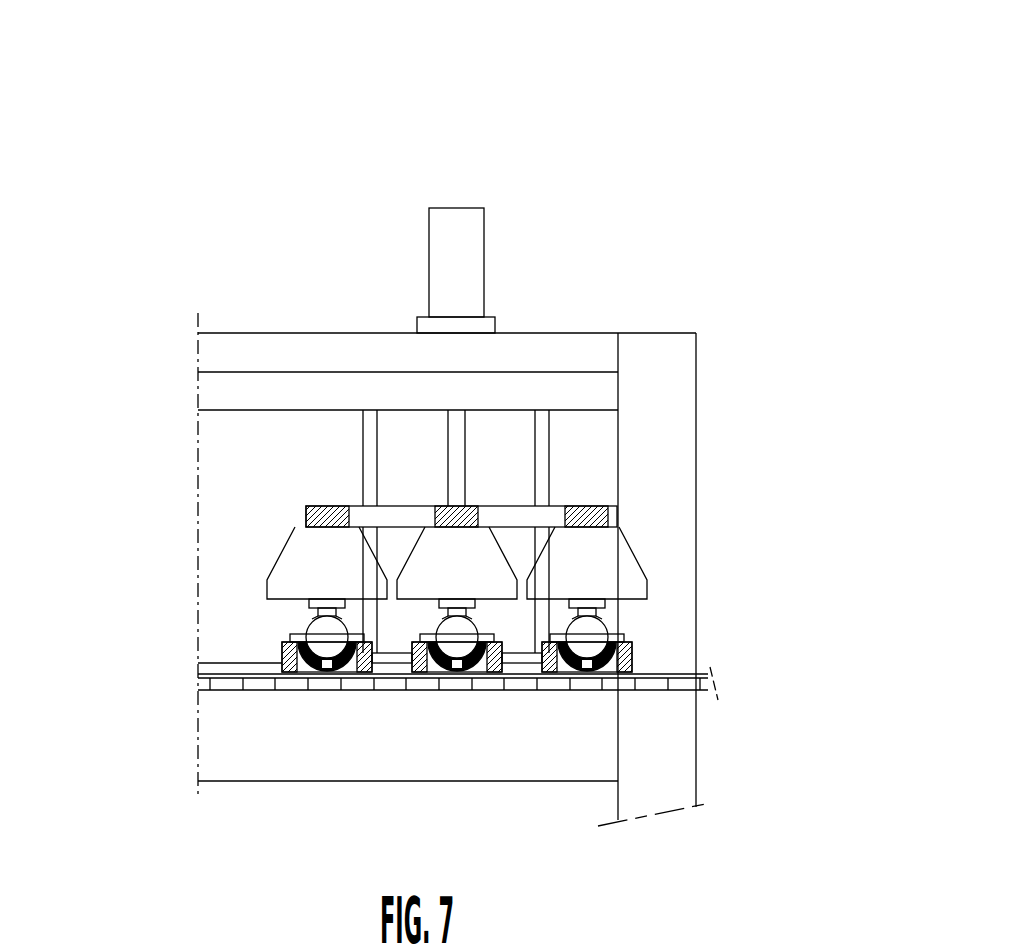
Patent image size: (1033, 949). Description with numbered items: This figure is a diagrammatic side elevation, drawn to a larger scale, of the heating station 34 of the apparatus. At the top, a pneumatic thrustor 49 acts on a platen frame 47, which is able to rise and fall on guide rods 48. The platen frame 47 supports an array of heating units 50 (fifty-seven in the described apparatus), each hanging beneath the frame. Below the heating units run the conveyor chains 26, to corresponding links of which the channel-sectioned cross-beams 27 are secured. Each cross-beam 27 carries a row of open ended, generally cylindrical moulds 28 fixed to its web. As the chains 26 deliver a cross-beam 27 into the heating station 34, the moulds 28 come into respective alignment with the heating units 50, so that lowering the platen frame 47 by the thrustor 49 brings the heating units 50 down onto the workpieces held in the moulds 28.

The conveyor chains 26 is at (653, 683).
The cross-beam 27 is at (280, 648).
The mould 28 is at (300, 668).
The heating station 34 is at (587, 303).
The platen frame 47 is at (604, 510).
The guide rods 48 is at (365, 458).
The pneumatic thrustor 49 is at (457, 220).
The heating units 50 is at (672, 562).